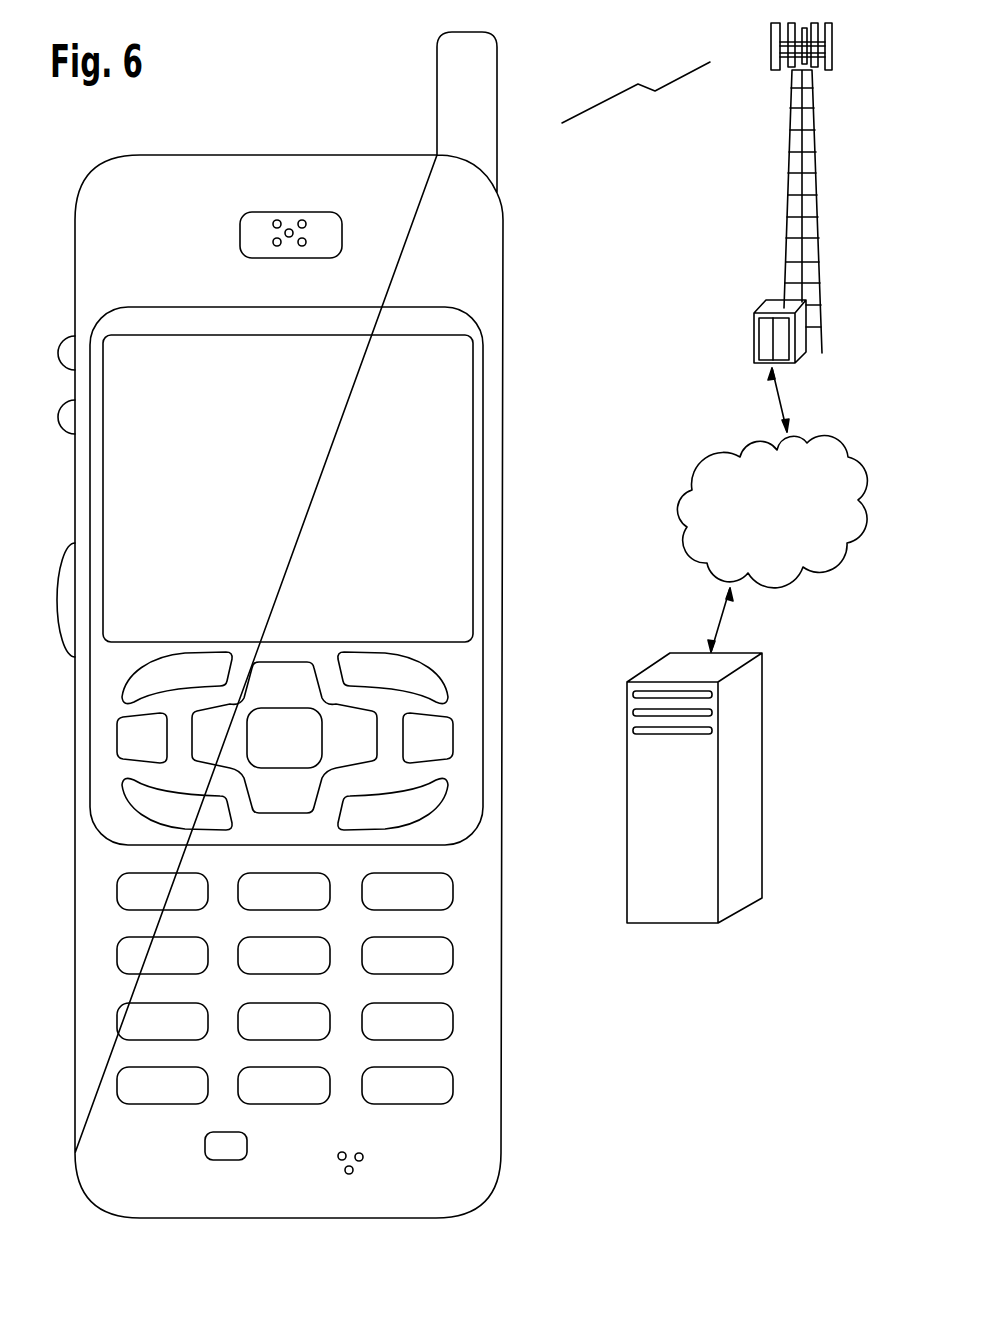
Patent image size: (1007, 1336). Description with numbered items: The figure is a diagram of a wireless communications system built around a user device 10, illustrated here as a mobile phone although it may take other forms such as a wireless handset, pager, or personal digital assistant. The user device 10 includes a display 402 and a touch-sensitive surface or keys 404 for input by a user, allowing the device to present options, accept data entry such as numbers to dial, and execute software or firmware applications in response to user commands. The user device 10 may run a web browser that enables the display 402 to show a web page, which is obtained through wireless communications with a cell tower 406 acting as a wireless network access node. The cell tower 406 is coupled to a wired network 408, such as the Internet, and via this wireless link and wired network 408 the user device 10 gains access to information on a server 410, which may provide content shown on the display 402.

The user device 10 is at (125, 1218).
The display 402 is at (485, 350).
The keys 404 is at (508, 1057).
The cell tower 406 is at (788, 209).
The wired network 408 is at (694, 562).
The server 410 is at (673, 924).